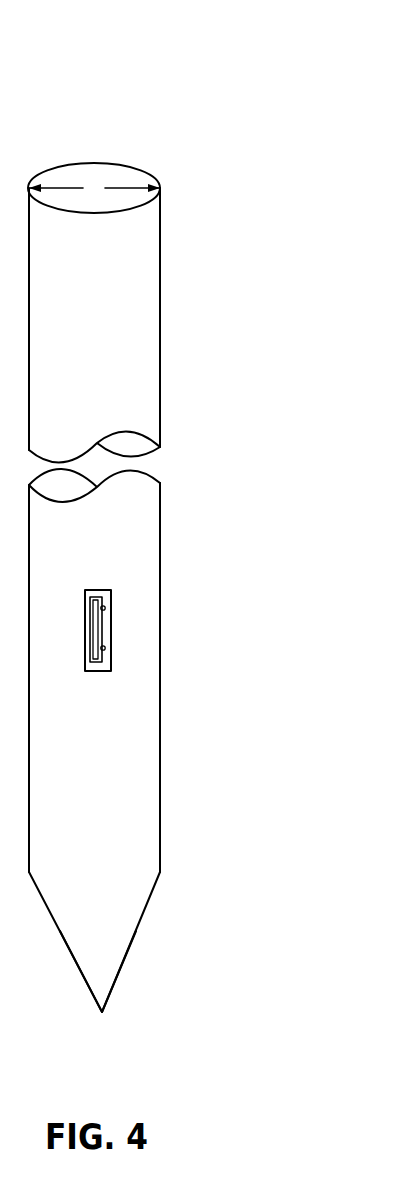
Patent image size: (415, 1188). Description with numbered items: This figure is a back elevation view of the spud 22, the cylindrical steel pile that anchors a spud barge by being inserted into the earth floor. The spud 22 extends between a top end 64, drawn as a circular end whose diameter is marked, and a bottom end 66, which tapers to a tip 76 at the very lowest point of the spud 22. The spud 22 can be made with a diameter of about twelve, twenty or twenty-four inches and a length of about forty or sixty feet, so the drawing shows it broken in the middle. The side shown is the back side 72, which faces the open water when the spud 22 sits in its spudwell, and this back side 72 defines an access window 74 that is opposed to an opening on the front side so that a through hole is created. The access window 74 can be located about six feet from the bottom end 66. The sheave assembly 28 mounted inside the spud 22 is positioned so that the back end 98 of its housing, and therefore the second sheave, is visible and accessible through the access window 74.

The spud 22 is at (150, 117).
The top end 64 is at (123, 240).
The back side 72 is at (135, 535).
The sheave assembly 28 is at (175, 583).
The back end 98 is at (102, 633).
The access window 74 is at (107, 668).
The bottom end 66 is at (117, 870).
The tip point 76 is at (103, 1011).